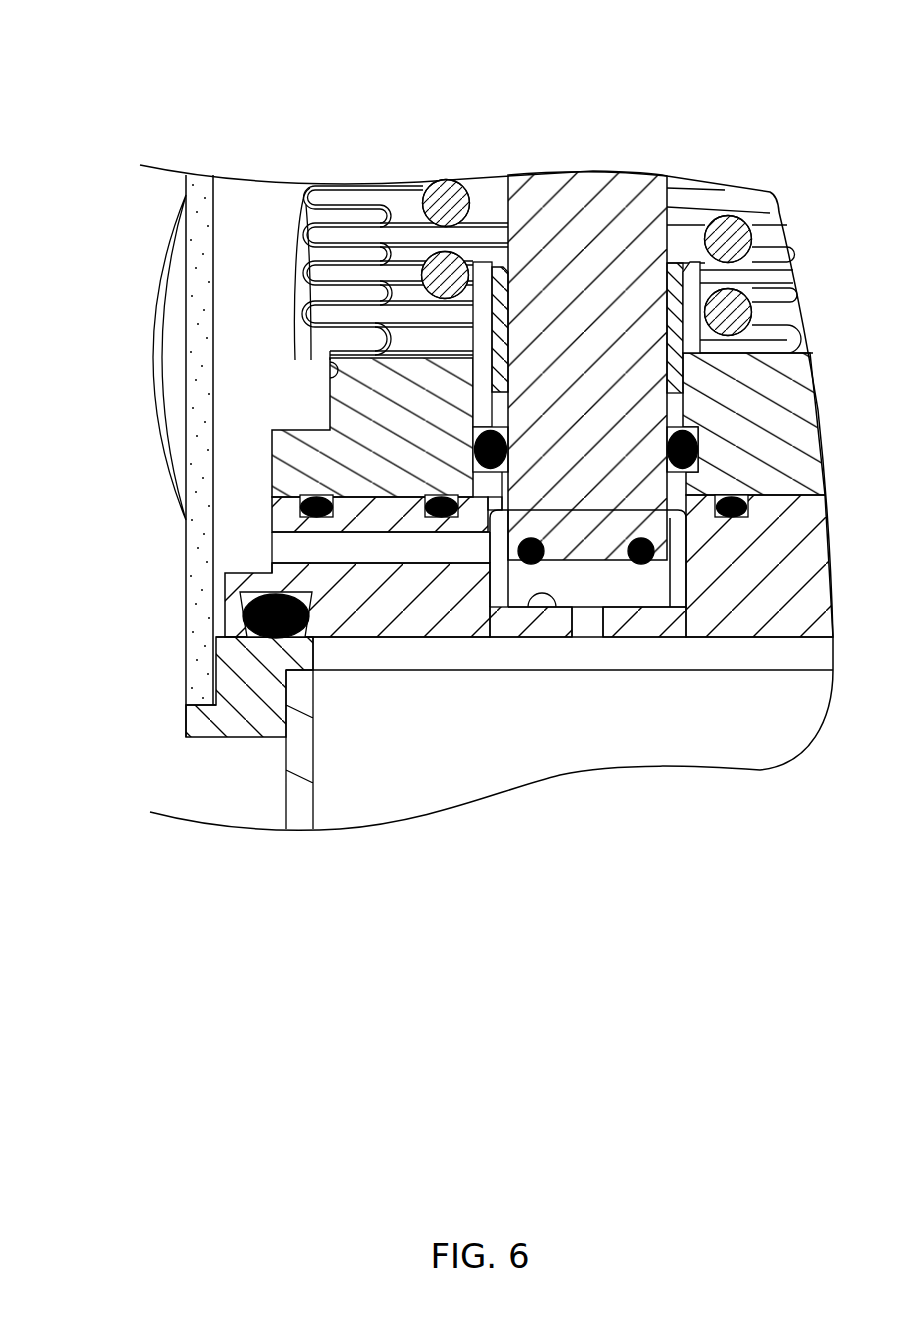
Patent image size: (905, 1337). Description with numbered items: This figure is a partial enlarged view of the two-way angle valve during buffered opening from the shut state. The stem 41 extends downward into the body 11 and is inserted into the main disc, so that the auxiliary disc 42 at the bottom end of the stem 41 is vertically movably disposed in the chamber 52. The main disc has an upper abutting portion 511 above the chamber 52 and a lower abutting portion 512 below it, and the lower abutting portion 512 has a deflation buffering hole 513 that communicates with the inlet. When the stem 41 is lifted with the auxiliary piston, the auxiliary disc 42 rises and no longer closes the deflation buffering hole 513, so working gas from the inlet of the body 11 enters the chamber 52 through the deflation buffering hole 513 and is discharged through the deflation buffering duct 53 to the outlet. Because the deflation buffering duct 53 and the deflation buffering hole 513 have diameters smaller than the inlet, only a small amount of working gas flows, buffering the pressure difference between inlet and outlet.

The body 11 is at (185, 372).
The stem 41 is at (628, 187).
The auxiliary disc 42 is at (679, 637).
The chamber 52 is at (632, 590).
The deflation buffering duct 53 is at (285, 548).
The upper abutting portion 511 is at (497, 607).
The lower abutting portion 512 is at (525, 607).
The deflation buffering hole 513 is at (587, 627).